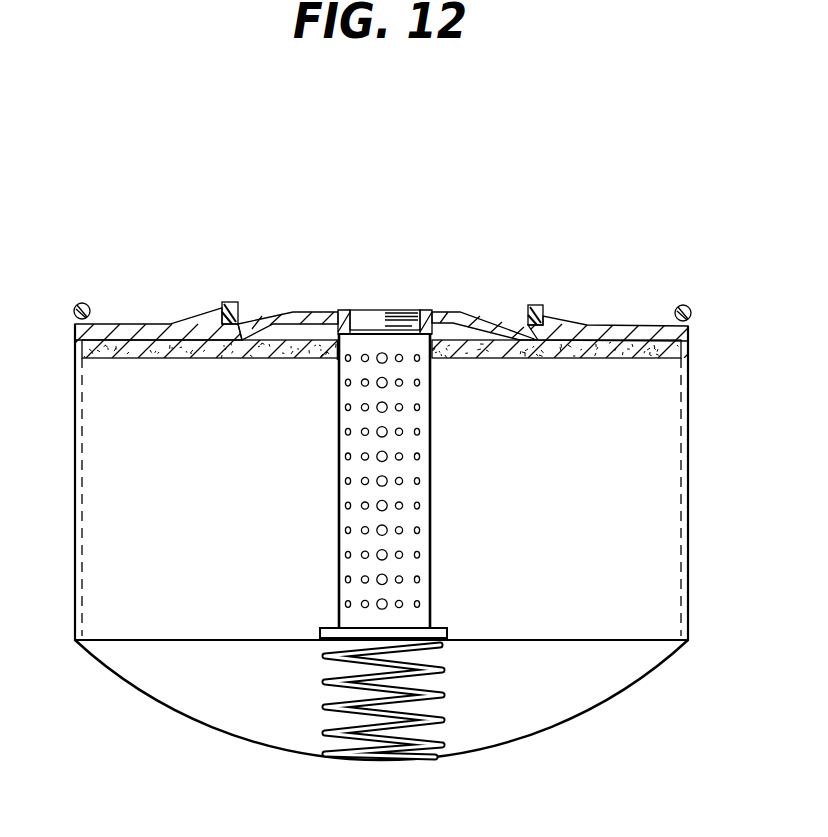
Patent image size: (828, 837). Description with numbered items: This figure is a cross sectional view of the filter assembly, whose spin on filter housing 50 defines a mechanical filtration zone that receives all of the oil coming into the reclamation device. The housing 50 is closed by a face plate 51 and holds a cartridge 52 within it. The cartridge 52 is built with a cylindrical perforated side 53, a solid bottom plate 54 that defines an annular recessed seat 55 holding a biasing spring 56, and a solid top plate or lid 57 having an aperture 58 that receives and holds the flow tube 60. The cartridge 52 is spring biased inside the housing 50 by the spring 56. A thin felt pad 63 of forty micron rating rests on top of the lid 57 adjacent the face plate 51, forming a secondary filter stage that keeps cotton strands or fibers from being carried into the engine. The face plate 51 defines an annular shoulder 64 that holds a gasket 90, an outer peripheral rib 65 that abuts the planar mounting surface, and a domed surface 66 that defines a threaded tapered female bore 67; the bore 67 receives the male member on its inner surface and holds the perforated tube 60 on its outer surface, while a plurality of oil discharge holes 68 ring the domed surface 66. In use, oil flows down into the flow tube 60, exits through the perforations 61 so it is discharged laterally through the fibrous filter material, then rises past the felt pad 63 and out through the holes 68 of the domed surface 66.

The spin on filter housing 50 is at (73, 520).
The face plate 51 is at (612, 325).
The cartridge 52 is at (681, 583).
The cylindrical perforated side 53 is at (83, 493).
The solid bottom plate 54 is at (178, 640).
The annular recessed seat 55 is at (320, 629).
The biasing spring 56 is at (443, 725).
The solid top plate or lid 57 is at (230, 359).
The aperture 58 is at (337, 358).
The flow tube 60 is at (430, 447).
The perforations 61 is at (398, 557).
The felt pad 63 is at (562, 359).
The annular shoulder 64 is at (545, 305).
The outer peripheral rib 65 is at (688, 303).
The domed surface 66 is at (462, 312).
The threaded tapered female bore 67 is at (394, 310).
The oil discharge holes 68 is at (278, 312).
The gasket 90 is at (230, 302).